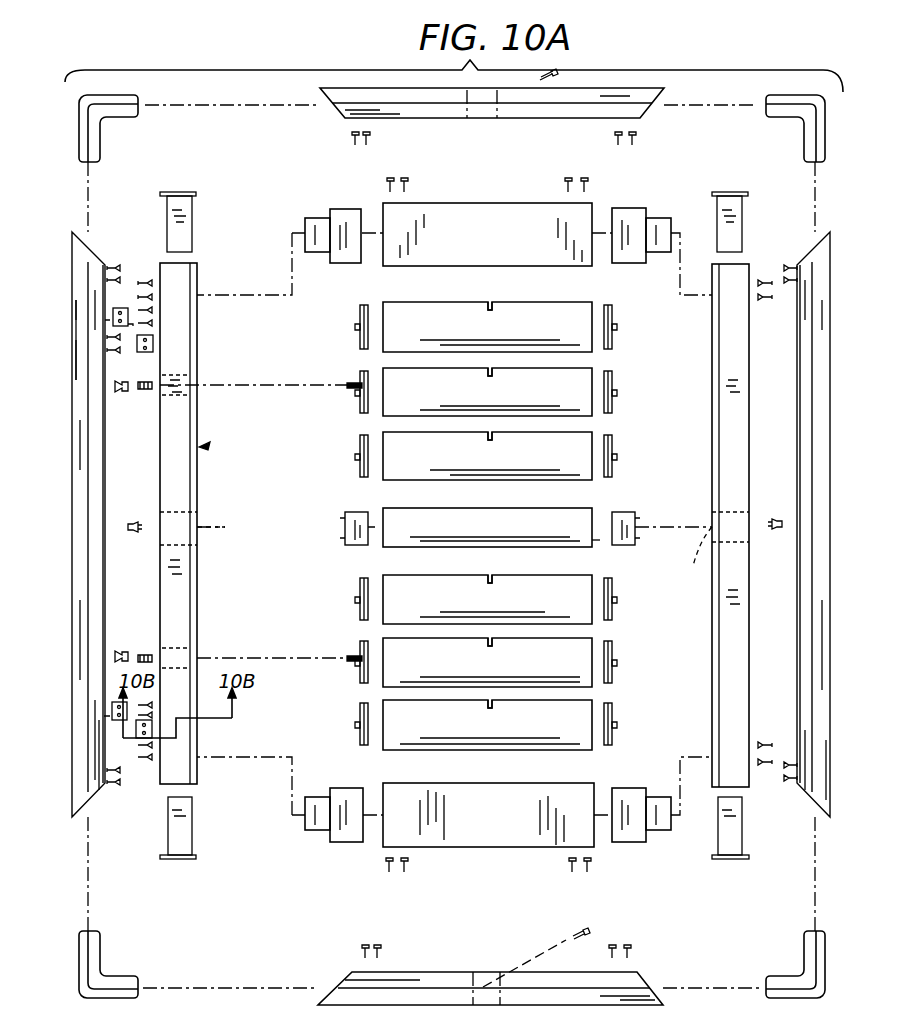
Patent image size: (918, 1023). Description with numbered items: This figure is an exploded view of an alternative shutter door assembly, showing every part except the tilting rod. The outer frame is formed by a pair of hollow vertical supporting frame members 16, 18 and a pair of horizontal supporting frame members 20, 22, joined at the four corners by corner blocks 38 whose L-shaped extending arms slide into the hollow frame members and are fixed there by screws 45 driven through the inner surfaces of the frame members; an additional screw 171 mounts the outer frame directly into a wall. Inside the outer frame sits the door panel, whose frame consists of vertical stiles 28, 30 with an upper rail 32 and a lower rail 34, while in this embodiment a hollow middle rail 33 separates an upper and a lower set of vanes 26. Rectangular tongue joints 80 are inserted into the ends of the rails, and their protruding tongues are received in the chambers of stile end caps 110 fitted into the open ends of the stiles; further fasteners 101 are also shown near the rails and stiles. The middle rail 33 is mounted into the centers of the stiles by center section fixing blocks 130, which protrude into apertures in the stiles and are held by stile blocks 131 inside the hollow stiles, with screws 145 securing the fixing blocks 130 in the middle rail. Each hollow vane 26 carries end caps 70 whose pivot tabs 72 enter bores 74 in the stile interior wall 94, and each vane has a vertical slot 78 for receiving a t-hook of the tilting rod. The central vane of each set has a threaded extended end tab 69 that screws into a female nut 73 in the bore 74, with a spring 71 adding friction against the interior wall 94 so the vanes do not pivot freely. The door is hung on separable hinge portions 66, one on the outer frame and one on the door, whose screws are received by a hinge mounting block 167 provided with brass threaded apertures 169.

The vertical supporting frame member 16 is at (73, 530).
The vertical supporting frame member 18 is at (822, 486).
The horizontal supporting frame member 20 is at (545, 118).
The horizontal supporting frame member 22 is at (455, 975).
The vane 26 is at (560, 372).
The vertical stile 28 is at (180, 485).
The vertical stile 30 is at (738, 486).
The upper rail 32 is at (487, 214).
The middle rail 33 is at (598, 548).
The lower rail 34 is at (505, 850).
The corner block 38 is at (108, 118).
The screw 45 is at (358, 140).
The hinge portion 66 is at (140, 352).
The extended end tab 69 is at (352, 382).
The end cap 70 is at (358, 312).
The spring 71 is at (152, 386).
The pivot tab 72 is at (355, 327).
The female nut 73 is at (122, 393).
The bore 74 is at (185, 400).
The vertical slot 78 is at (490, 302).
The tongue joint 80 is at (345, 210).
The interior wall 94 is at (209, 446).
The mounting screw 101 is at (392, 176).
The stile end cap 110 is at (184, 192).
The center section fixing block 130 is at (343, 520).
The stile block 131 is at (454, 553).
The screw 145 is at (134, 522).
The hinge mounting block 167 is at (104, 318).
The brass threaded aperture 169 is at (102, 318).
The screw 171 is at (556, 78).